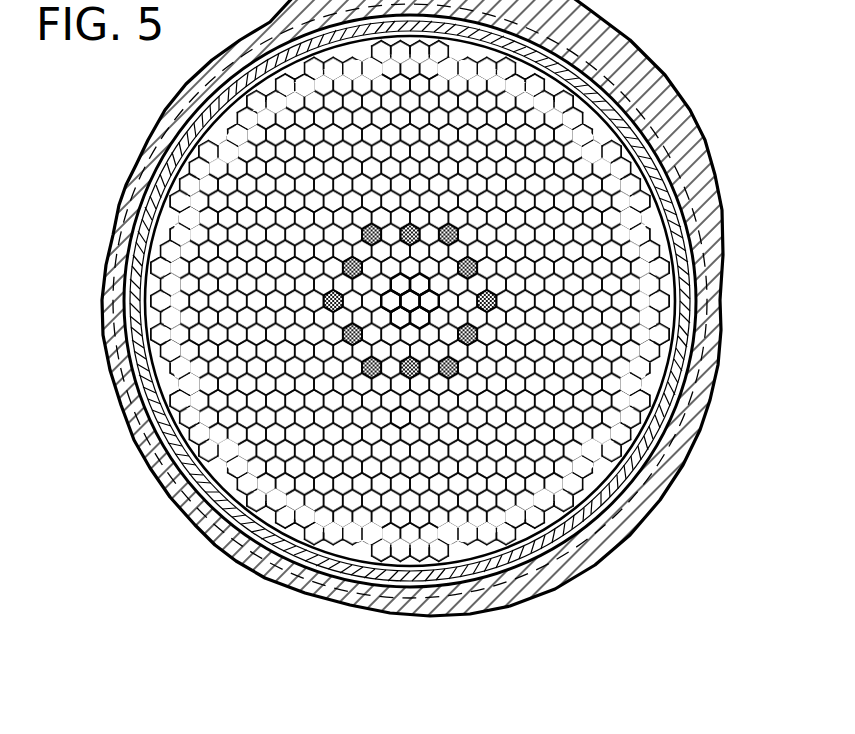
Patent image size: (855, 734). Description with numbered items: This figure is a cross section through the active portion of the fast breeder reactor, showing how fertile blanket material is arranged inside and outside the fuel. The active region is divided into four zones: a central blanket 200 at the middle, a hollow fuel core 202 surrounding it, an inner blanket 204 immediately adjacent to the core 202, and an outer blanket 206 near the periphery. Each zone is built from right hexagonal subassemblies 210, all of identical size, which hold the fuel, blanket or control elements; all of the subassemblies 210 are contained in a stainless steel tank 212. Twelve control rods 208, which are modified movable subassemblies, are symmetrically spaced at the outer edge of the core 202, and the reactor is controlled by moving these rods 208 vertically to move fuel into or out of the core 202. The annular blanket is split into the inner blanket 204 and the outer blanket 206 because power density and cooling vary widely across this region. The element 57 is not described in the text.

The reactor vessel wall 57 is at (703, 191).
The central blanket 200 is at (418, 268).
The hollow fuel core 202 is at (432, 353).
The inner blanket 204 is at (392, 414).
The outer blanket 206 is at (432, 504).
The control rods 208 is at (326, 297).
The subassemblies 210 is at (407, 557).
The stainless steel tank 212 is at (145, 378).